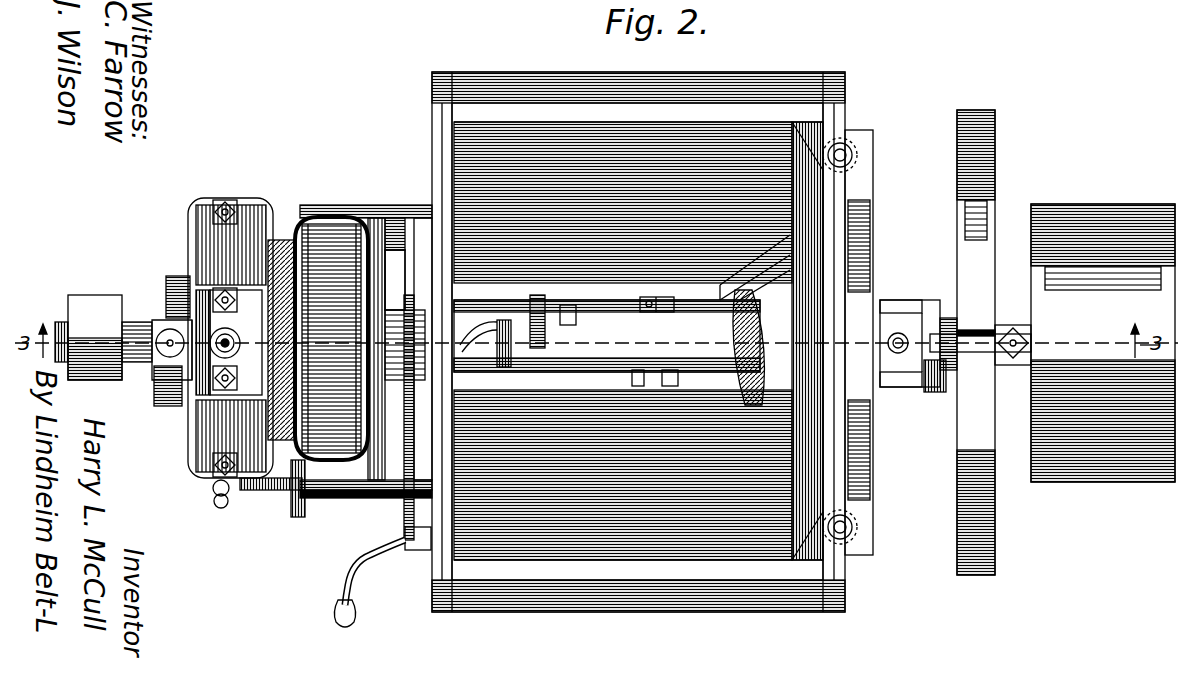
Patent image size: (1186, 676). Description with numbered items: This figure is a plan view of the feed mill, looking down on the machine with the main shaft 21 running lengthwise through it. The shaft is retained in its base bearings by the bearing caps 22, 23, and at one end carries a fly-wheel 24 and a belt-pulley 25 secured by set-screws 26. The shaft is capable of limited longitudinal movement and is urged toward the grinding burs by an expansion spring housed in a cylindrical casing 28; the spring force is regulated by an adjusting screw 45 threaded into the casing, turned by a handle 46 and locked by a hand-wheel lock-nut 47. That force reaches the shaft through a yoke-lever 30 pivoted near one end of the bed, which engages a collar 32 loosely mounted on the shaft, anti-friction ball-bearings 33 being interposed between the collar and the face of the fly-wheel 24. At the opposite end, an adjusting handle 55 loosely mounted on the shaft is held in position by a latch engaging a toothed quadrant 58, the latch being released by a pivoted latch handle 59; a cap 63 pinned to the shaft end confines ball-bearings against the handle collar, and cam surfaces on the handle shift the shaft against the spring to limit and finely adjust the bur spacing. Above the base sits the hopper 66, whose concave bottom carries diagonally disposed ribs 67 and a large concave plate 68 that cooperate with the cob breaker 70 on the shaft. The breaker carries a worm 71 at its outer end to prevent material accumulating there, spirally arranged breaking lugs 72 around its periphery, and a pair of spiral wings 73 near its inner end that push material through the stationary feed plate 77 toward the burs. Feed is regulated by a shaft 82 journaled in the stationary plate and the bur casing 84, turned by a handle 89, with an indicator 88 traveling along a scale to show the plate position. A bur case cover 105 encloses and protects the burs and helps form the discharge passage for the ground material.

The hopper 66 is at (728, 104).
The fly-wheel 24 is at (980, 152).
The belt-pulley 25 is at (1090, 232).
The diagonally disposed ribs 67 is at (720, 290).
The large concave plate 68 is at (645, 292).
The bur case cover 105 is at (330, 236).
The bur casing 84 is at (395, 248).
The stationary feed plate 77 is at (416, 286).
The cap 63 is at (90, 320).
The ratchet or tooth quadrant 58 is at (176, 288).
The adjusting handle 55 is at (168, 330).
The bearing cap 22 is at (245, 308).
The pivoted latch handle 59 is at (162, 376).
The spirally disposed wings 73 is at (503, 320).
The cob breaker 70 is at (598, 338).
The breaking members or lugs 72 is at (568, 330).
The worm 71 is at (738, 318).
The bearing cap 23 is at (886, 314).
The anti-friction ball-bearings 33 is at (958, 322).
The set-screws 26 is at (1012, 328).
The main shaft 21 is at (932, 345).
The collar 32 is at (938, 392).
The yoke-lever 30 is at (903, 387).
The handle 46 is at (221, 508).
The adjusting screw 45 is at (275, 490).
The hand-wheel lock-nut 47 is at (298, 518).
The indicator 88 is at (352, 491).
The shaft 82 is at (410, 470).
The cylindrical casing 28 is at (335, 500).
The handle 89 is at (372, 578).